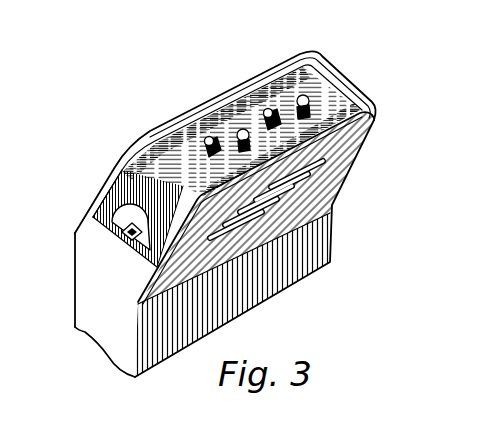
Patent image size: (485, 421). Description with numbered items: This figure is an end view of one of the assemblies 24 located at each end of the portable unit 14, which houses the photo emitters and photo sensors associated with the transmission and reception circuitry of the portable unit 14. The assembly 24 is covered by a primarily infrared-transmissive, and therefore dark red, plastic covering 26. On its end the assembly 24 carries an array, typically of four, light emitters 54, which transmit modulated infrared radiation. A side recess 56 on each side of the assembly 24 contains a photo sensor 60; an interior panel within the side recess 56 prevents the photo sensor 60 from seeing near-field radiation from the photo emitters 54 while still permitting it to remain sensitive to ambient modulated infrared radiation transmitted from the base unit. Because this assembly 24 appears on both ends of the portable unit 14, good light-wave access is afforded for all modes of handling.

The portable unit 14 is at (246, 303).
The assembly 24 is at (163, 109).
The plastic covering 26 is at (128, 186).
The light emitters 54 is at (210, 138).
The side recess 56 is at (118, 218).
The photo sensor 60 is at (352, 63).